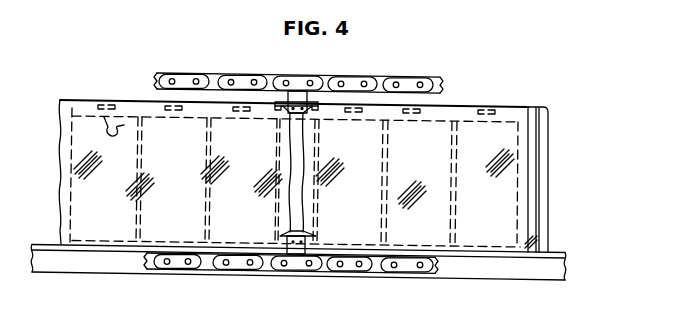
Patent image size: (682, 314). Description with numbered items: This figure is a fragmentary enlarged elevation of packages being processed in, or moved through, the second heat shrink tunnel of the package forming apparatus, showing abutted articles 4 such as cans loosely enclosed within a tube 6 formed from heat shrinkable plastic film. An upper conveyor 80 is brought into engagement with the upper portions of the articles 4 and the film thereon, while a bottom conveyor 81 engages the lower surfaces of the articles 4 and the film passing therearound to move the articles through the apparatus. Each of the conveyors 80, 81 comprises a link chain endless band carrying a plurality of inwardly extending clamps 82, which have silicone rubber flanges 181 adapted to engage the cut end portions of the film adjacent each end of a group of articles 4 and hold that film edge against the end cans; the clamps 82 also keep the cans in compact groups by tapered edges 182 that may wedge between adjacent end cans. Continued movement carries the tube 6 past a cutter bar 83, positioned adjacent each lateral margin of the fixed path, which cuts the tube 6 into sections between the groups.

The articles 4 is at (60, 190).
The tube 6 is at (60, 163).
The upper conveyor 80 is at (356, 76).
The bottom conveyor 81 is at (350, 268).
The clamps 82 is at (303, 124).
The cutter bar 83 is at (540, 160).
The silicone rubber flanges 181 is at (307, 104).
The tapered edges 182 is at (280, 122).